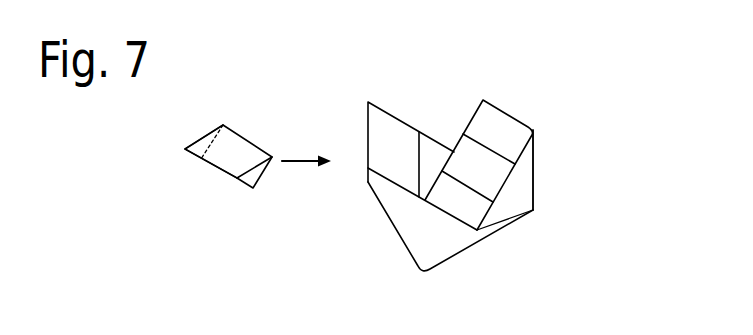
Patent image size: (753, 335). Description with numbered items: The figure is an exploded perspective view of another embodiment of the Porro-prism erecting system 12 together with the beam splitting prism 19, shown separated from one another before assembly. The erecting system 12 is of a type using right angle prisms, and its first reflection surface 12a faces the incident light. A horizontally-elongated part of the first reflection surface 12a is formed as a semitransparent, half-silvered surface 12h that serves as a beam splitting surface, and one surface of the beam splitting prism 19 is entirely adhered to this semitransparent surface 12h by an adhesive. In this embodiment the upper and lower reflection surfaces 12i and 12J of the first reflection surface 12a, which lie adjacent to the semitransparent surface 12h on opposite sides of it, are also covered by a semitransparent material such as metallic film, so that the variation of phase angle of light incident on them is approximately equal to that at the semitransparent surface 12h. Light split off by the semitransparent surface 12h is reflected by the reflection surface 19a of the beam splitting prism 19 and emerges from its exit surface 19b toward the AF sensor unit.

The Porro-prism erecting system 12 is at (421, 69).
The first reflection surface 12a is at (608, 189).
The semitransparent surface 12h is at (528, 210).
The upper reflection surface 12i is at (529, 136).
The lower reflection surface 12J is at (476, 210).
The beam splitting prism 19 is at (227, 160).
The reflection surface 19a is at (207, 163).
The exit surface 19b is at (203, 148).